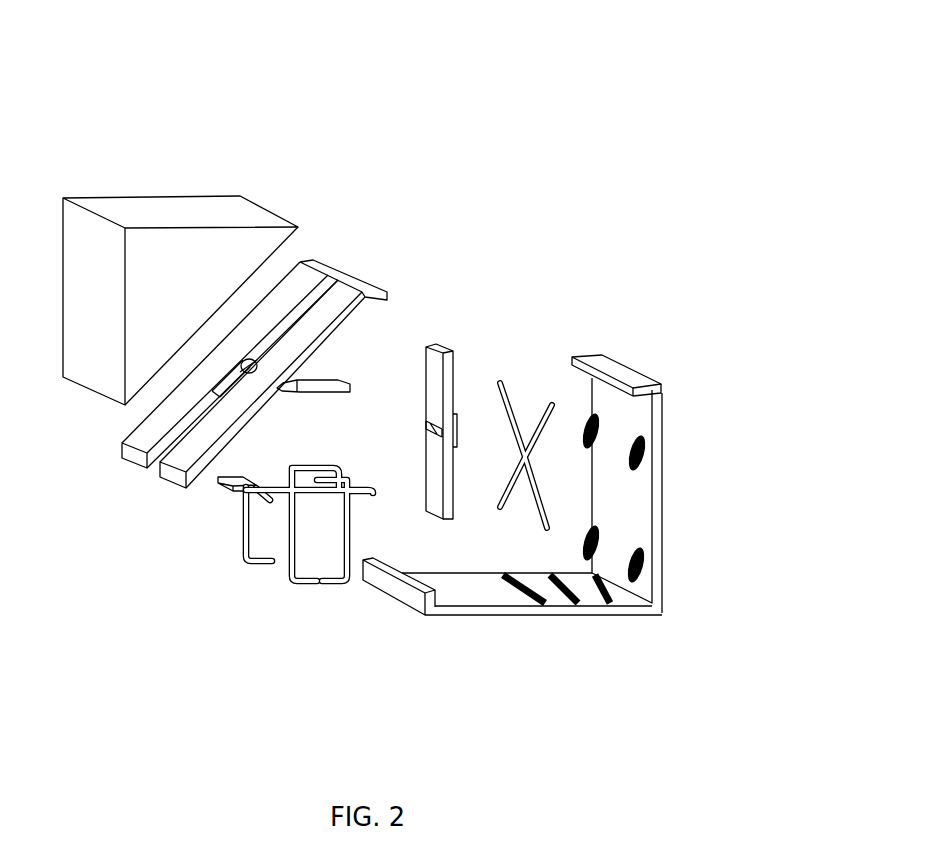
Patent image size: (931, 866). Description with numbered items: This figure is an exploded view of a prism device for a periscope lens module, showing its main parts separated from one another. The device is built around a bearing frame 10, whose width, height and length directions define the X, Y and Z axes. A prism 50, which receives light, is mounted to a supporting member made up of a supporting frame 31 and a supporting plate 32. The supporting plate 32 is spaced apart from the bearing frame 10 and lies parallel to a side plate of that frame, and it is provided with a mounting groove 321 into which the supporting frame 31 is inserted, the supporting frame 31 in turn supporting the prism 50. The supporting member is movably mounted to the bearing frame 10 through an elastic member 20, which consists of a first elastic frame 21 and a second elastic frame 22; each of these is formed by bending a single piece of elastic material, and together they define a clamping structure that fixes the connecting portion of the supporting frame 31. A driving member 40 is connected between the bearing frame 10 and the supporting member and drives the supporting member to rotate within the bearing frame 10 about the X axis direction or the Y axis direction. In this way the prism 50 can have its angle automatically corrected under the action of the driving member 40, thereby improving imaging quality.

The bearing frame 10 is at (632, 537).
The elastic member 20 is at (288, 613).
The first elastic frame 21 is at (243, 548).
The second elastic frame 22 is at (342, 567).
The supporting frame 31 is at (150, 437).
The supporting plate 32 is at (480, 348).
The mounting groove 321 is at (426, 418).
The driving member 40 is at (517, 403).
The prism 50 is at (152, 215).